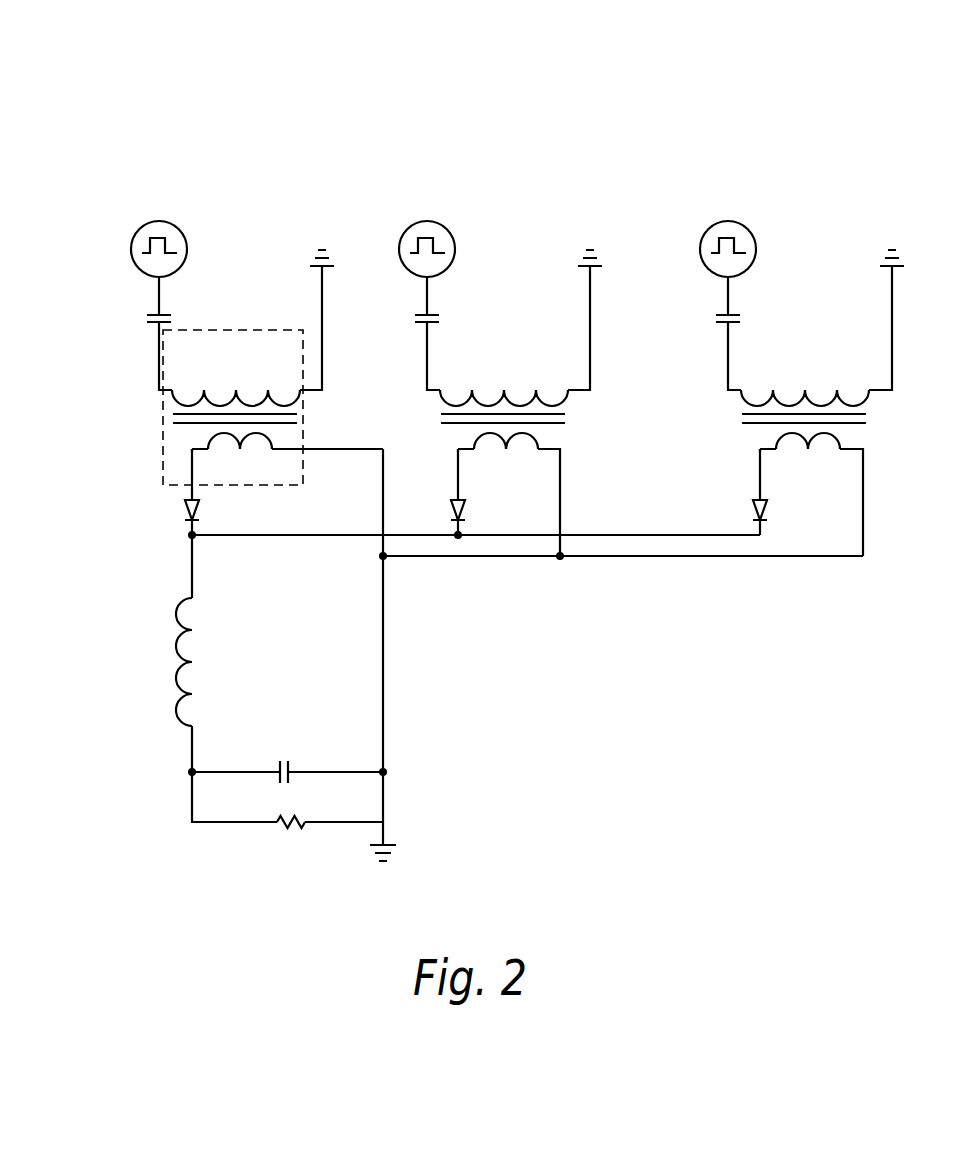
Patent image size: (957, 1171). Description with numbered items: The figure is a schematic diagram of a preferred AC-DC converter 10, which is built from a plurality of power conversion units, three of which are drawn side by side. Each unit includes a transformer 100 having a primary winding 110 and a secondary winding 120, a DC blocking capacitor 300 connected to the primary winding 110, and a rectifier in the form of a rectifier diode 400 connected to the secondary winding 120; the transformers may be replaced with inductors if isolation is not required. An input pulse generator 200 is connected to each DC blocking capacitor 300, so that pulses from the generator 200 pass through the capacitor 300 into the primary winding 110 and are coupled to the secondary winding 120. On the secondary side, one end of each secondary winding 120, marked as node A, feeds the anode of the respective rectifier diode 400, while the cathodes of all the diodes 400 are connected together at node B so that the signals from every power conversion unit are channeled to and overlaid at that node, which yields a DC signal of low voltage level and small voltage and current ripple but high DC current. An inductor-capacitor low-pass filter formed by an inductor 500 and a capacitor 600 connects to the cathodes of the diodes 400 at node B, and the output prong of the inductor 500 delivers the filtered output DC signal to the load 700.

The AC-DC converter 10 is at (877, 49).
The transformer 100 is at (493, 407).
The primary winding 110 is at (222, 402).
The secondary winding 120 is at (226, 438).
The input pulse generator 200 is at (159, 221).
The DC blocking capacitor 300 is at (147, 322).
The rectifier diode 400 is at (185, 508).
The inductor 500 is at (177, 644).
The capacitor 600 is at (284, 760).
The load 700 is at (288, 835).
The node A is at (190, 449).
The node B is at (196, 540).